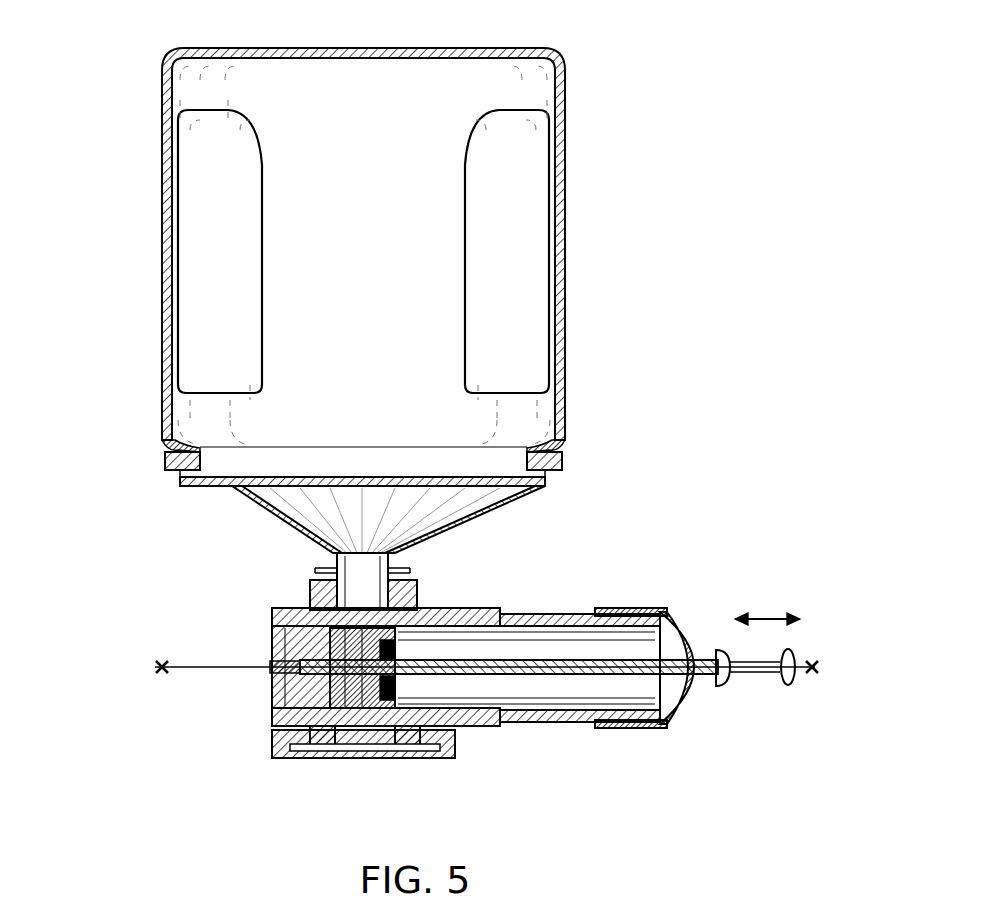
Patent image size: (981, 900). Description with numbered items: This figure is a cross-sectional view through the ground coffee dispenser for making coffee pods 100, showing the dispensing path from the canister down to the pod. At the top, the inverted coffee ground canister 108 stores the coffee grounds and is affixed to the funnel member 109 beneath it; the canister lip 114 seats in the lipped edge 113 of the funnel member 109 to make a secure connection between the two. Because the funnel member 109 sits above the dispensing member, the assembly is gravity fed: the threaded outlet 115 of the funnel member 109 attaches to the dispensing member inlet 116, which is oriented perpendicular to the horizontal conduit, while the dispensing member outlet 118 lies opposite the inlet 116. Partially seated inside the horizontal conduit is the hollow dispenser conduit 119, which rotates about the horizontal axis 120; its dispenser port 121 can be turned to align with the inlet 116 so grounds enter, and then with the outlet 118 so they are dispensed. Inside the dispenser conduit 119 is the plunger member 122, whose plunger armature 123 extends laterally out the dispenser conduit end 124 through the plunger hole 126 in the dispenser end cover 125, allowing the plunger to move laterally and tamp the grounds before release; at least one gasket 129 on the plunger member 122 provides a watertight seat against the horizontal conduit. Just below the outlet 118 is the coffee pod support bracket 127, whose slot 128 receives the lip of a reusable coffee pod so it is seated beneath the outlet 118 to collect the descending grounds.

The ground coffee dispenser for making coffee pods 100 is at (663, 84).
The coffee ground canister 108 is at (162, 211).
The funnel member 109 is at (285, 520).
The lipped edge 113 is at (170, 470).
The canister lip 114 is at (168, 458).
The threaded outlet 115 is at (385, 600).
The dispensing member inlet 116 is at (310, 590).
The dispensing member outlet 118 is at (330, 735).
The dispenser conduit 119 is at (533, 614).
The horizontal axis 120 is at (176, 668).
The dispenser port 121 is at (335, 640).
The plunger member 122 is at (430, 749).
The plunger armature 123 is at (525, 674).
The dispenser conduit end 124 is at (692, 640).
The dispenser end cover 125 is at (668, 618).
The plunger hole 126 is at (688, 700).
The coffee pod support bracket 127 is at (272, 740).
The slot 128 is at (402, 720).
The gasket 129 is at (378, 700).